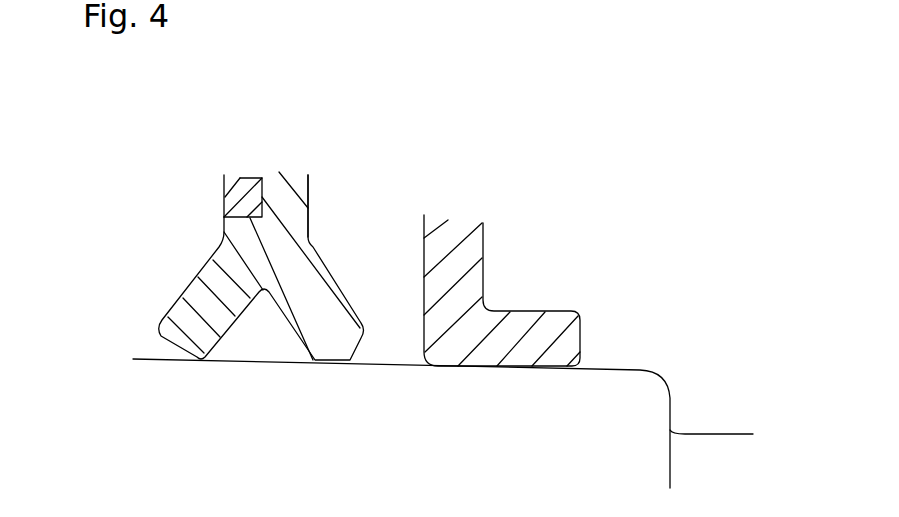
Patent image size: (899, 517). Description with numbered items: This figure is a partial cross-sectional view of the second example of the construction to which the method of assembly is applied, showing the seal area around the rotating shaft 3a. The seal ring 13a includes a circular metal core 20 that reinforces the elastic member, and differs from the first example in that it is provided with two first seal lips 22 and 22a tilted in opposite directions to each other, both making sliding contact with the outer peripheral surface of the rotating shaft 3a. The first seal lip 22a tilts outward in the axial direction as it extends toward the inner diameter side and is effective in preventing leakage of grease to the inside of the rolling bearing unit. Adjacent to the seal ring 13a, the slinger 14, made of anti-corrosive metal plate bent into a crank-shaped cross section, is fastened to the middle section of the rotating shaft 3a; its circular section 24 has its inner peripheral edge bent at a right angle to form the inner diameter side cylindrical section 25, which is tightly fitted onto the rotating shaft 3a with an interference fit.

The rotating shaft 3a is at (227, 388).
The seal ring 13a is at (307, 160).
The slinger 14 is at (473, 247).
The metal core 20 is at (239, 191).
The first seal lip 22 is at (337, 317).
The first seal lip 22a is at (203, 305).
The circular section 24 is at (455, 267).
The inner diameter side cylindrical section 25 is at (527, 340).